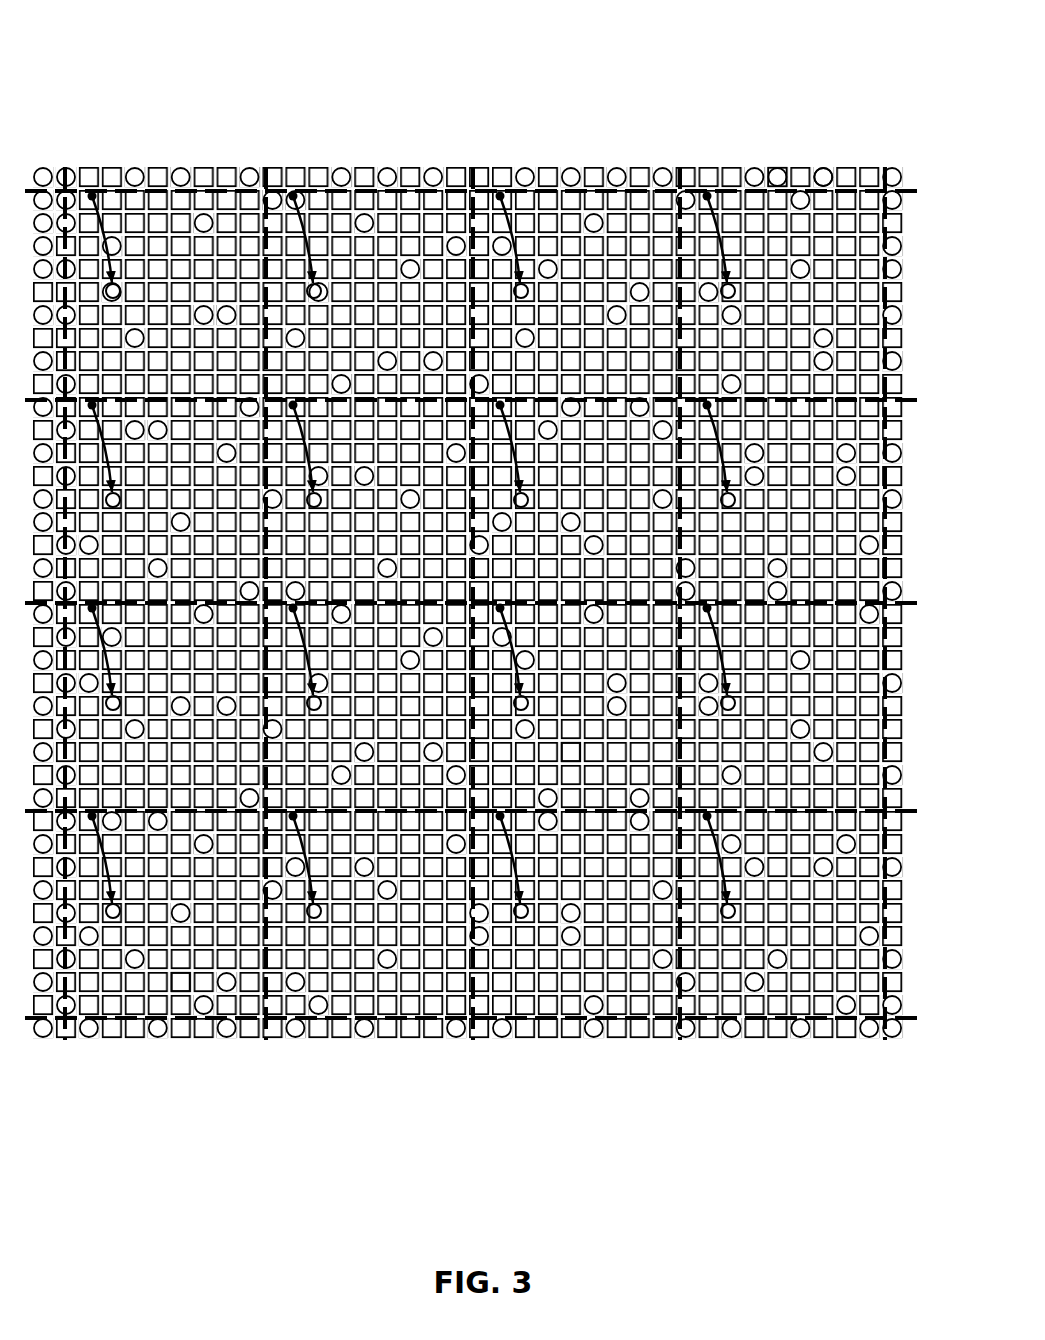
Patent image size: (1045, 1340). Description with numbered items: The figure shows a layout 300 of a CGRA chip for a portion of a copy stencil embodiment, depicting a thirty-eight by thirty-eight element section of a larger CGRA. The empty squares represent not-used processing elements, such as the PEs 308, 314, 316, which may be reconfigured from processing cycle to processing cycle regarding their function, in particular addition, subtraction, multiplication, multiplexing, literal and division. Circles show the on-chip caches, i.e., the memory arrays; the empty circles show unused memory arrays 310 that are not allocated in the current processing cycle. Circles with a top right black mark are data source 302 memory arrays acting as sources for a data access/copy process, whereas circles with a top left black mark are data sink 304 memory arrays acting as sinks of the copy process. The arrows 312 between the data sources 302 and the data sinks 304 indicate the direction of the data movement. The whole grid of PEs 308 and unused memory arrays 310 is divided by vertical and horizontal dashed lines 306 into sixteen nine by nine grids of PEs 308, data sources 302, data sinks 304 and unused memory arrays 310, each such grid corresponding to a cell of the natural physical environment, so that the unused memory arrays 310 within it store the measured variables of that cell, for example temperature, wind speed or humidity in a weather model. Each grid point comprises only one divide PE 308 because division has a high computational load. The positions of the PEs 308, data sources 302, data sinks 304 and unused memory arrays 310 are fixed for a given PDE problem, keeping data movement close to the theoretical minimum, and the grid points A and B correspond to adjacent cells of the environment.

The sensor array / pixel grid 300 is at (178, 93).
The data source 302 is at (297, 186).
The data sink 304 is at (323, 282).
The dashed lines 306 is at (670, 163).
The processing element 308 is at (775, 160).
The unused memory array 310 is at (821, 162).
The arrows 312 is at (108, 248).
The processing element 314 is at (186, 988).
The processing element 316 is at (573, 775).